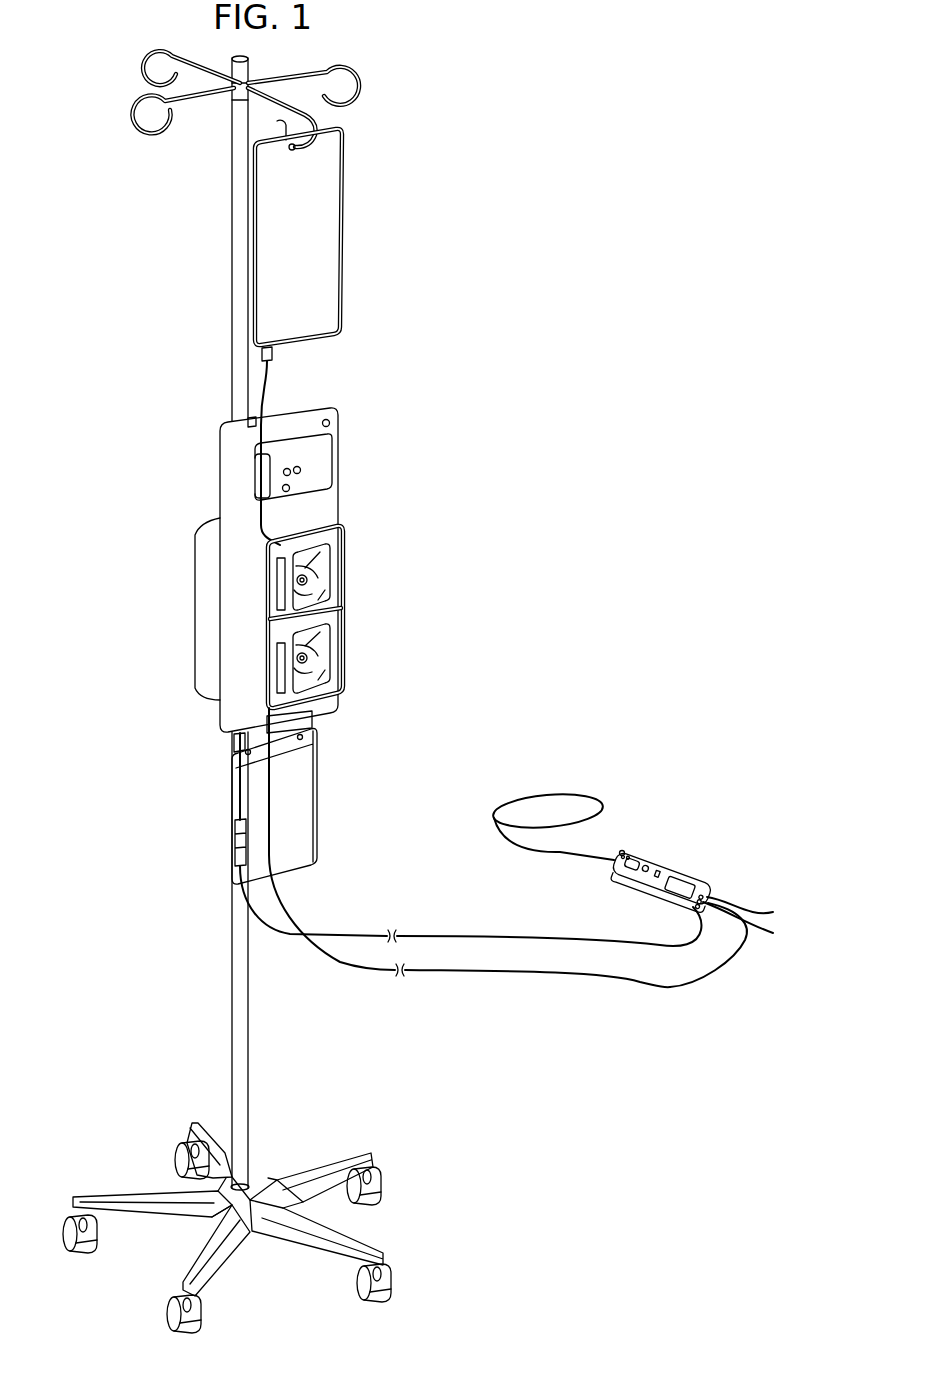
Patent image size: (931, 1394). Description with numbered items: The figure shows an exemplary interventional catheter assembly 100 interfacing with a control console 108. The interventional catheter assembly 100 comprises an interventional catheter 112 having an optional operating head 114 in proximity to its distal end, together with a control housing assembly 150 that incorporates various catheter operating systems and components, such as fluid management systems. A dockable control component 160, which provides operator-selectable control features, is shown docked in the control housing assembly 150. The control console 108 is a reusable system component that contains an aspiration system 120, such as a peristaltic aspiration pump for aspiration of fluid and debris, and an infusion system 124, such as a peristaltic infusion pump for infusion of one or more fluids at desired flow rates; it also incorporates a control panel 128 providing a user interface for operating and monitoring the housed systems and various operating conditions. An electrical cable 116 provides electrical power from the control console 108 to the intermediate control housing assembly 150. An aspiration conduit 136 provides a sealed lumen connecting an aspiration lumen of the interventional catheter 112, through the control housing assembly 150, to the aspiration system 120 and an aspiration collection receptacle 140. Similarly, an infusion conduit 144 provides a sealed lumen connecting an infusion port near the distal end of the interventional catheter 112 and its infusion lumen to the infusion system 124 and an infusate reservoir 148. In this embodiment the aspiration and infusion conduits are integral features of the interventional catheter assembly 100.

The interventional catheter assembly 100 is at (432, 692).
The control console 108 is at (254, 570).
The interventional catheter 112 is at (558, 790).
The operating head 114 is at (537, 811).
The electrical cable 116 is at (470, 839).
The aspiration system 120 is at (339, 658).
The infusion system 124 is at (339, 576).
The control panel 128 is at (324, 460).
The aspiration conduit 136 is at (735, 957).
The aspiration collection receptacle 140 is at (310, 807).
The infusion conduit 144 is at (500, 873).
The infusate reservoir 148 is at (332, 245).
The control housing assembly 150 is at (670, 892).
The control component 160 is at (656, 818).